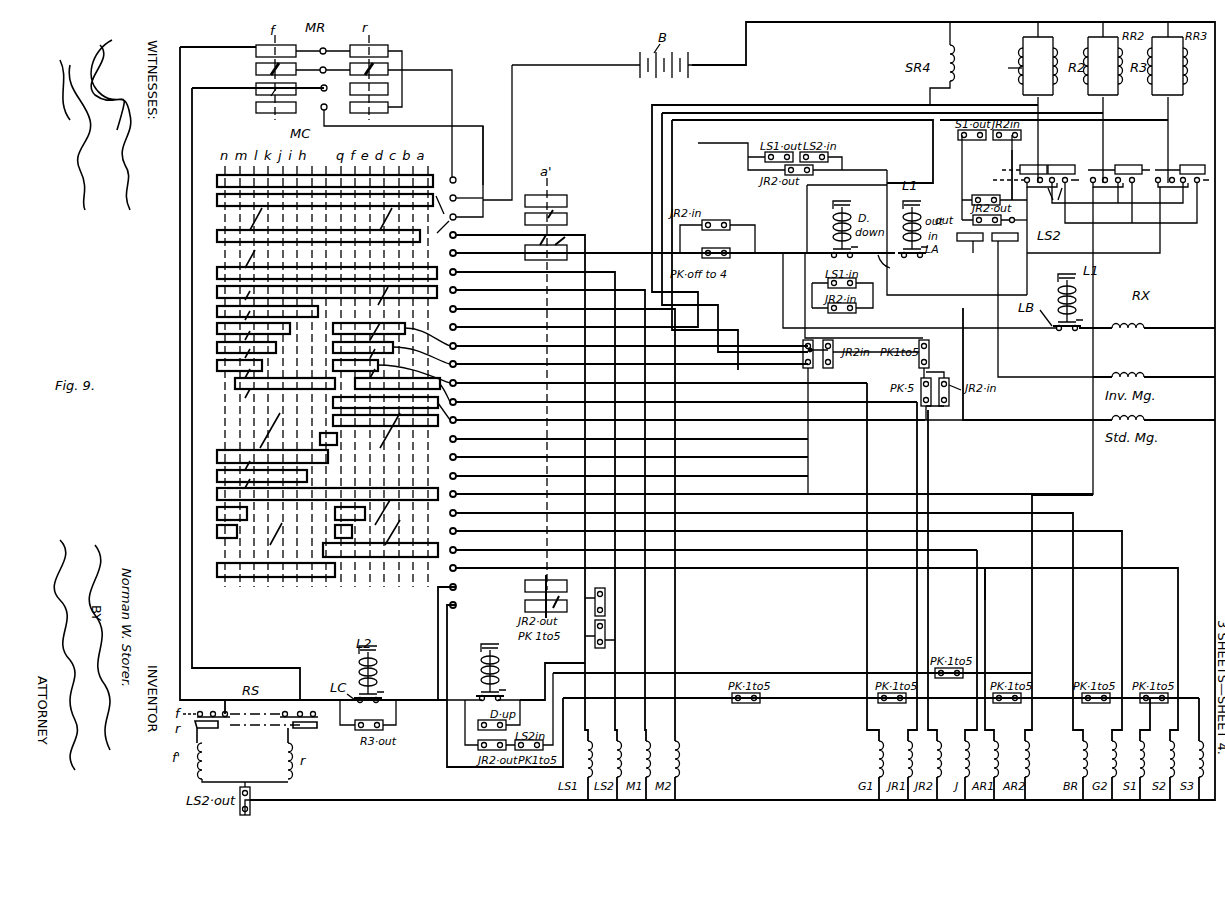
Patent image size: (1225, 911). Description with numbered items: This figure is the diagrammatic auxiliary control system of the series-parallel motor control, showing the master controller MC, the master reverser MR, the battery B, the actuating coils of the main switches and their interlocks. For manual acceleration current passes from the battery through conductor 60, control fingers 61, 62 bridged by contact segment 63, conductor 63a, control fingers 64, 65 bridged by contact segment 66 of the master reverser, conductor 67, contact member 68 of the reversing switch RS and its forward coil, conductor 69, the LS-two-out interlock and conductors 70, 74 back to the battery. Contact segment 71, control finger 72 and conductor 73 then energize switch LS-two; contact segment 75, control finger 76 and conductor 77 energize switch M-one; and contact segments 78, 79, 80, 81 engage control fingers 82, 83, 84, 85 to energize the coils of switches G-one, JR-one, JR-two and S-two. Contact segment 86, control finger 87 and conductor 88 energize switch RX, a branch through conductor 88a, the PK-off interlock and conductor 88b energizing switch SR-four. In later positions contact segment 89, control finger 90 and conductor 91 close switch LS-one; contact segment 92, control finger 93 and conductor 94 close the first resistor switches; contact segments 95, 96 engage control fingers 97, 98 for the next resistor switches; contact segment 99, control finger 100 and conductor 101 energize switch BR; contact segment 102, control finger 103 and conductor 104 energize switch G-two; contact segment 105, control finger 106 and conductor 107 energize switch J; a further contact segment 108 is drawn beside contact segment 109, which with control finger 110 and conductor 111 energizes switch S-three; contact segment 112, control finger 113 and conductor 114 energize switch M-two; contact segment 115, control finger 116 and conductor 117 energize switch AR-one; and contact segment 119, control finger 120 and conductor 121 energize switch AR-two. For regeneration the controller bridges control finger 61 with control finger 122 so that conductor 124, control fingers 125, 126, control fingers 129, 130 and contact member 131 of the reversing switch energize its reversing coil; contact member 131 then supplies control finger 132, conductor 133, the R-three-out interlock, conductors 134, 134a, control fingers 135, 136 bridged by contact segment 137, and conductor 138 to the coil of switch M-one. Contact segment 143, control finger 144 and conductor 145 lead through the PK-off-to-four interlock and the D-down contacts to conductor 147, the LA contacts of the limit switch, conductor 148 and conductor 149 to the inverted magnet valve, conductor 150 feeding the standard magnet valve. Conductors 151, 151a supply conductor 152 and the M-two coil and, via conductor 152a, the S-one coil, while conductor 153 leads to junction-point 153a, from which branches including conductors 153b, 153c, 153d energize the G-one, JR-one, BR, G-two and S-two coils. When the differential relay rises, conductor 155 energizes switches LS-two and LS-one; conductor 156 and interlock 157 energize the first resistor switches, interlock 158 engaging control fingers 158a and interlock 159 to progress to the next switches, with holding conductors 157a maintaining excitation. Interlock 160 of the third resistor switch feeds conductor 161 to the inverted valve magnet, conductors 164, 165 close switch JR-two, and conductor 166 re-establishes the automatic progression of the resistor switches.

The conductor 60 is at (598, 60).
The control finger 61 is at (466, 191).
The control finger 62 is at (463, 174).
The contact segment 63 is at (438, 214).
The conductor 63a is at (452, 100).
The control finger 64 is at (325, 71).
The control finger 65 is at (327, 51).
The contact segment 66 is at (256, 70).
The conductor 67 is at (232, 49).
The contact member 68 is at (214, 731).
The conductor 69 is at (239, 791).
The conductor 70 is at (346, 800).
The contact segment 71 is at (452, 252).
The control finger 72 is at (456, 272).
The conductor 73 is at (620, 621).
The conductor 74 is at (1215, 468).
The contact segment 75 is at (439, 309).
The control finger 76 is at (456, 290).
The conductor 77 is at (644, 717).
The contact segment 78 is at (440, 391).
The contact segment 79 is at (440, 409).
The contact segment 80 is at (435, 421).
The contact segment 81 is at (410, 560).
The control finger 82 is at (456, 383).
The control finger 83 is at (456, 402).
The control finger 84 is at (456, 420).
The control finger 85 is at (456, 550).
The contact segment 86 is at (436, 490).
The control finger 87 is at (456, 494).
The conductor 88 is at (1106, 470).
The conductor 88a is at (808, 430).
The conductor 88b is at (807, 203).
The contact segment 89 is at (398, 245).
The control finger 90 is at (456, 235).
The conductor 91 is at (590, 578).
The contact segment 92 is at (427, 335).
The control finger 93 is at (456, 327).
The conductor 94 is at (924, 105).
The contact segment 95 is at (421, 353).
The contact segment 96 is at (414, 372).
The control finger 97 is at (456, 346).
The control finger 98 is at (456, 364).
The contact segment 99 is at (335, 514).
The control finger 100 is at (456, 513).
The conductor 101 is at (1080, 591).
The contact segment 102 is at (335, 532).
The control finger 103 is at (456, 531).
The conductor 104 is at (1128, 591).
The contact segment 105 is at (337, 440).
The control finger 106 is at (456, 439).
The conductor 107 is at (974, 596).
The contact 108 is at (235, 384).
The contact segment 109 is at (295, 570).
The control finger 110 is at (456, 568).
The conductor 111 is at (1178, 626).
The contact segment 112 is at (318, 311).
The control finger 113 is at (456, 309).
The conductor 114 is at (680, 586).
The contact segment 115 is at (217, 448).
The control finger 116 is at (456, 457).
The conductor 117 is at (985, 601).
The contact segment 119 is at (217, 476).
The control finger 120 is at (456, 476).
The conductor 121 is at (632, 469).
The control finger 122 is at (466, 210).
The conductor 124 is at (480, 145).
The control finger 125 is at (324, 114).
The control finger 126 is at (192, 96).
The control finger 129 is at (302, 708).
The control finger 130 is at (285, 712).
The contact member 131 is at (307, 731).
The control finger 132 is at (327, 714).
The conductor 133 is at (313, 710).
The conductor 134 is at (416, 694).
The conductor 134a is at (447, 641).
The control finger 135 is at (456, 587).
The control finger 136 is at (456, 605).
The contact segment 137 is at (529, 596).
The conductor 138 is at (438, 613).
The contact segment 143 is at (568, 245).
The control finger 144 is at (456, 253).
The conductor 145 is at (675, 247).
The conductor 147 is at (952, 274).
The conductor 148 is at (985, 253).
The conductor 149 is at (998, 283).
The conductor 150 is at (920, 295).
The conductor 151 is at (475, 692).
The conductor 151a is at (470, 719).
The conductor 152 is at (652, 670).
The conductor 152a is at (752, 671).
The conductor 153 is at (658, 698).
The junction-point 153a is at (869, 707).
The conductor 153b is at (949, 680).
The conductor 153c is at (1094, 707).
The conductor 153d is at (1152, 707).
The conductor 155 is at (535, 690).
The conductor 156 is at (956, 172).
The interlock 157 is at (1027, 164).
The conductors 157a is at (1030, 268).
The interlock 158 is at (1062, 164).
The control fingers 158a is at (1063, 203).
The interlock 159 is at (1115, 164).
The interlock 160 is at (1193, 163).
The conductor 161 is at (1110, 341).
The conductor 164 is at (832, 355).
The conductor 165 is at (929, 425).
The conductor 166 is at (1012, 150).